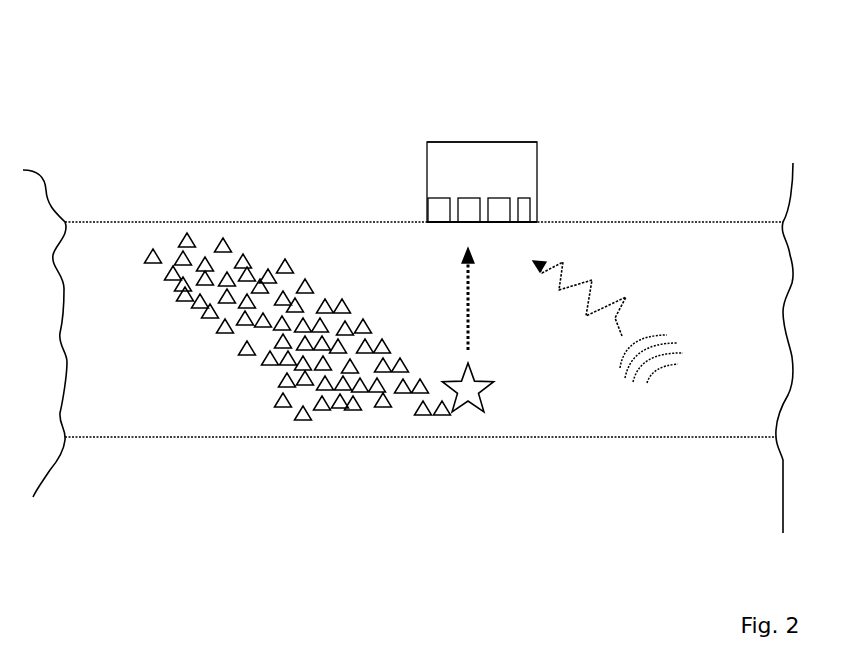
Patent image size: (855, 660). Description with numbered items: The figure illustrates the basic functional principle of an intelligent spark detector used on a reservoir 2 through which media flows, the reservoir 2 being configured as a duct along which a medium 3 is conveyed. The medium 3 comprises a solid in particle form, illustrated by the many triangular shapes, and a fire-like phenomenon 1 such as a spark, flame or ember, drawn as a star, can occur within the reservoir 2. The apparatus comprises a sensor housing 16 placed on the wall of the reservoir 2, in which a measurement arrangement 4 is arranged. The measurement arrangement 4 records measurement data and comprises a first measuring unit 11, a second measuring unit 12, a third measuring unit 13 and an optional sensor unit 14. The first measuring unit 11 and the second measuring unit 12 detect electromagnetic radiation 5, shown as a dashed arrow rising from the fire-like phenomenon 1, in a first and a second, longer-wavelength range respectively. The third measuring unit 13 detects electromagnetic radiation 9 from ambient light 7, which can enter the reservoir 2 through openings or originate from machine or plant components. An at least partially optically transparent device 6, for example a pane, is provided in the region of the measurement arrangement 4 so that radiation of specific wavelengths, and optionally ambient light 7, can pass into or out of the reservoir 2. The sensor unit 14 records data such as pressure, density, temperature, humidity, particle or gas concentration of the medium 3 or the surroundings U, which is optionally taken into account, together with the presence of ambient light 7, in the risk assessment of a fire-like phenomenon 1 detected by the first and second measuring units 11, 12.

The fire-like phenomenon 1 is at (460, 410).
The reservoir 2 is at (676, 222).
The medium 3 is at (229, 358).
The measurement arrangement 4 is at (441, 148).
The electromagnetic radiation 5 is at (470, 298).
The optically transparent device 6 is at (452, 224).
The ambient light 7 is at (678, 326).
The electromagnetic radiation from ambient light 9 is at (586, 317).
The first measuring unit 11 is at (432, 208).
The second measuring unit 12 is at (474, 206).
The third measuring unit 13 is at (500, 210).
The sensor unit 14 is at (538, 210).
The sensor housing 16 is at (440, 142).
The surroundings U is at (612, 400).